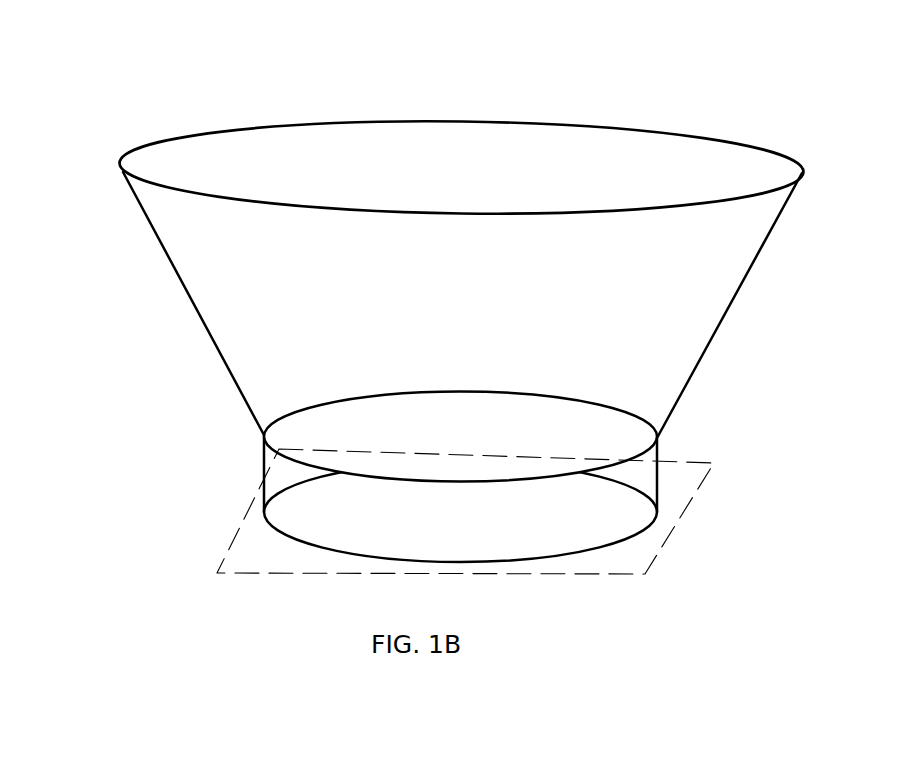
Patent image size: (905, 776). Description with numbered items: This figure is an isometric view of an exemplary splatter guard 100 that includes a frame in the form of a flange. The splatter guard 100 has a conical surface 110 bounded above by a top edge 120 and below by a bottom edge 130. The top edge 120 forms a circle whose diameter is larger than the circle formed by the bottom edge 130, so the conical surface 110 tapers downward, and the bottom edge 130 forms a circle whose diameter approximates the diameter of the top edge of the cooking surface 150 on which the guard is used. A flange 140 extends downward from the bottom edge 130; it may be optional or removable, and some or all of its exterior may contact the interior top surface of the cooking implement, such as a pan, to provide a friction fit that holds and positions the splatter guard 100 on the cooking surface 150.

The splatter guard 100 is at (246, 62).
The conical surface 110 is at (225, 368).
The top edge 120 is at (165, 143).
The bottom edge 130 is at (263, 437).
The flange 140 is at (263, 478).
The cooking surface 150 is at (253, 560).